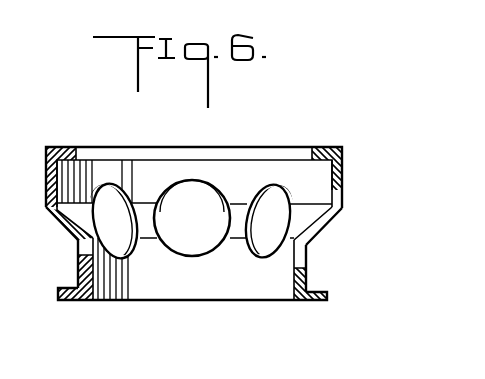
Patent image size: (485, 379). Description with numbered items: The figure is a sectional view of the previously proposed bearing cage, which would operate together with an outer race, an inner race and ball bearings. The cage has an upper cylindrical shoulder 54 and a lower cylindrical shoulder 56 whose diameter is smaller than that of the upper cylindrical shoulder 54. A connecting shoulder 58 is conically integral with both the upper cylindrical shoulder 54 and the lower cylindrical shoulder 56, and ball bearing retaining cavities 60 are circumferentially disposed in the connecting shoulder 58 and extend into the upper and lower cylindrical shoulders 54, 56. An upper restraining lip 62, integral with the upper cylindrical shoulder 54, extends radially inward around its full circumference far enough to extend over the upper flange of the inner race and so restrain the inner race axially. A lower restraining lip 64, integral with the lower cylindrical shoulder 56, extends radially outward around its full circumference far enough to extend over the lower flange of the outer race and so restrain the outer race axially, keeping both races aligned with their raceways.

The upper cylindrical shoulder 54 is at (343, 176).
The lower cylindrical shoulder 56 is at (80, 263).
The connecting shoulder 58 is at (327, 229).
The ball bearing retaining cavities 60 is at (184, 198).
The upper restraining lip 62 is at (71, 147).
The lower restraining lip 64 is at (312, 302).